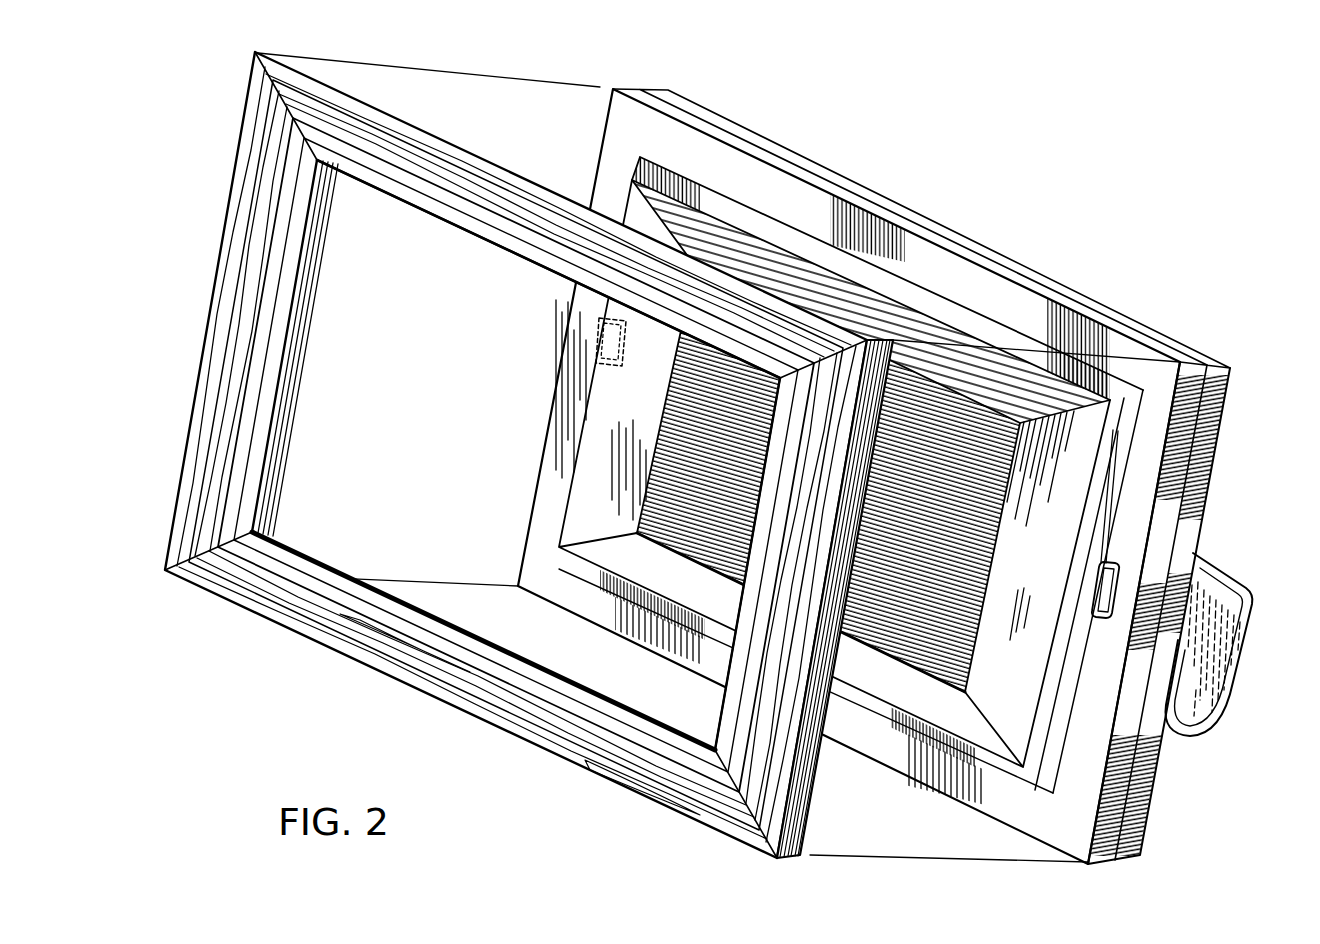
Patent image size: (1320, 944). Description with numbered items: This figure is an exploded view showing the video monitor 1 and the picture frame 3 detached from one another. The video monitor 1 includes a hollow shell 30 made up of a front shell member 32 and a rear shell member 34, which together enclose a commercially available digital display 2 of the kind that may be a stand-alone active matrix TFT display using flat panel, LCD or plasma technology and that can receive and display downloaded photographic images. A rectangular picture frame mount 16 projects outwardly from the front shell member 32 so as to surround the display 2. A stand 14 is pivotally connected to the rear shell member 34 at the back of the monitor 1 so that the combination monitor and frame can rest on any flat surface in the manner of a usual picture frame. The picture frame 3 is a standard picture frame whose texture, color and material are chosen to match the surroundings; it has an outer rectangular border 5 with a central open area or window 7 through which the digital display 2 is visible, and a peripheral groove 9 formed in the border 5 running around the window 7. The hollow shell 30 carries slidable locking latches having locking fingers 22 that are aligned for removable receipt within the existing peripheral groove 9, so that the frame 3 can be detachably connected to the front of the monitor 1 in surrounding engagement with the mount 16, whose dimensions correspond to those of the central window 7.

The video monitor 1 is at (936, 205).
The digital display 2 is at (700, 440).
The picture frame 3 is at (586, 773).
The outer border 5 is at (250, 258).
The central window 7 is at (368, 517).
The peripheral groove 9 is at (272, 452).
The stand 14 is at (1232, 686).
The picture frame mount 16 is at (772, 228).
The locking fingers 22 is at (598, 345).
The hollow shell 30 is at (1047, 262).
The front shell member 32 is at (1193, 388).
The rear shell member 34 is at (1195, 497).